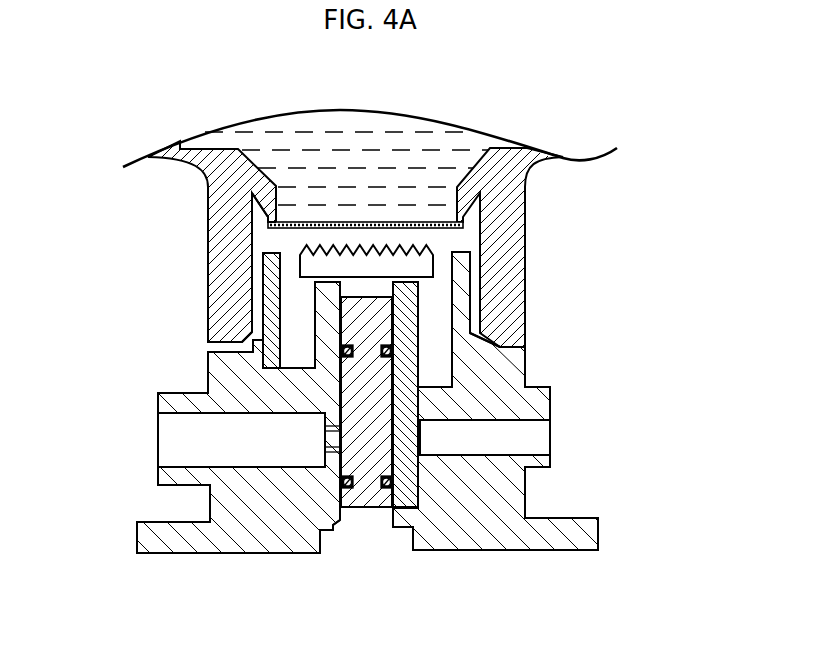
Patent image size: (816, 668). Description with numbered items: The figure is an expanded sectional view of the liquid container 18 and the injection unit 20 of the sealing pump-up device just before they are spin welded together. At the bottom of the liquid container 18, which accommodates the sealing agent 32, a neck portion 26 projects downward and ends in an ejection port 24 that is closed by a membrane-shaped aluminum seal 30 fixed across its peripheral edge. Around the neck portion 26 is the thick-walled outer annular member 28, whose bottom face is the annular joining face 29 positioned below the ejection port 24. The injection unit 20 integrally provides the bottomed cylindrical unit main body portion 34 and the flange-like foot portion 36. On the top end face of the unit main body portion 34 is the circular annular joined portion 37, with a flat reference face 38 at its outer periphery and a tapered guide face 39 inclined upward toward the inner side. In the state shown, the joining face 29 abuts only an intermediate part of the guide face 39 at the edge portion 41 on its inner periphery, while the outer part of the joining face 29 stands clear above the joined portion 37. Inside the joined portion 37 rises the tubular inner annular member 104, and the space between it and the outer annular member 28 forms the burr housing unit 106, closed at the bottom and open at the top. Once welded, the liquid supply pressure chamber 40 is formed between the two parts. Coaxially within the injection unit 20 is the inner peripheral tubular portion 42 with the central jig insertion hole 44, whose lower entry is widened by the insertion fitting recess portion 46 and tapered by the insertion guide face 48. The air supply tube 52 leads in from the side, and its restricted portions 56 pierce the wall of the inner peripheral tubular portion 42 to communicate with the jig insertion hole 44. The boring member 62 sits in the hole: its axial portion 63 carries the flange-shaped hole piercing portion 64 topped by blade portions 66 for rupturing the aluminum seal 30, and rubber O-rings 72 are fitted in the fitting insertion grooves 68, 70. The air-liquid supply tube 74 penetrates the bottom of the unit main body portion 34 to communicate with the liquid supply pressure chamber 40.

The liquid container 18 is at (616, 218).
The injection unit 20 is at (588, 437).
The ejection port 24 is at (287, 219).
The neck portion 26 is at (267, 217).
The outer annular member 28 is at (208, 262).
The joining face 29 is at (522, 346).
The aluminum seal 30 is at (373, 218).
The sealing agent 32 is at (427, 140).
The unit main body portion 34 is at (526, 378).
The foot portion 36 is at (137, 553).
The joined portion 37 is at (500, 346).
The reference face 38 is at (210, 348).
The guide face 39 is at (238, 340).
The liquid supply pressure chamber 40 is at (424, 390).
The edge portion 41 is at (260, 353).
The inner peripheral tubular portion 42 is at (392, 232).
The jig insertion hole 44 is at (400, 222).
The insertion fitting recess portion 46 is at (324, 530).
The insertion guide face 48 is at (397, 528).
The air supply tube 52 is at (187, 490).
The restricted portions 56 is at (327, 452).
The boring member 62 is at (367, 512).
The axial portion 63 is at (395, 438).
The hole piercing portion 64 is at (526, 222).
The blade portions 66 is at (330, 243).
The fitting insertion groove 68 is at (393, 351).
The fitting insertion groove 70 is at (393, 482).
The rubber O-rings 72 is at (343, 350).
The air-liquid supply tube 74 is at (540, 467).
The tubular inner annular member 104 is at (258, 244).
The burr housing unit 106 is at (472, 262).